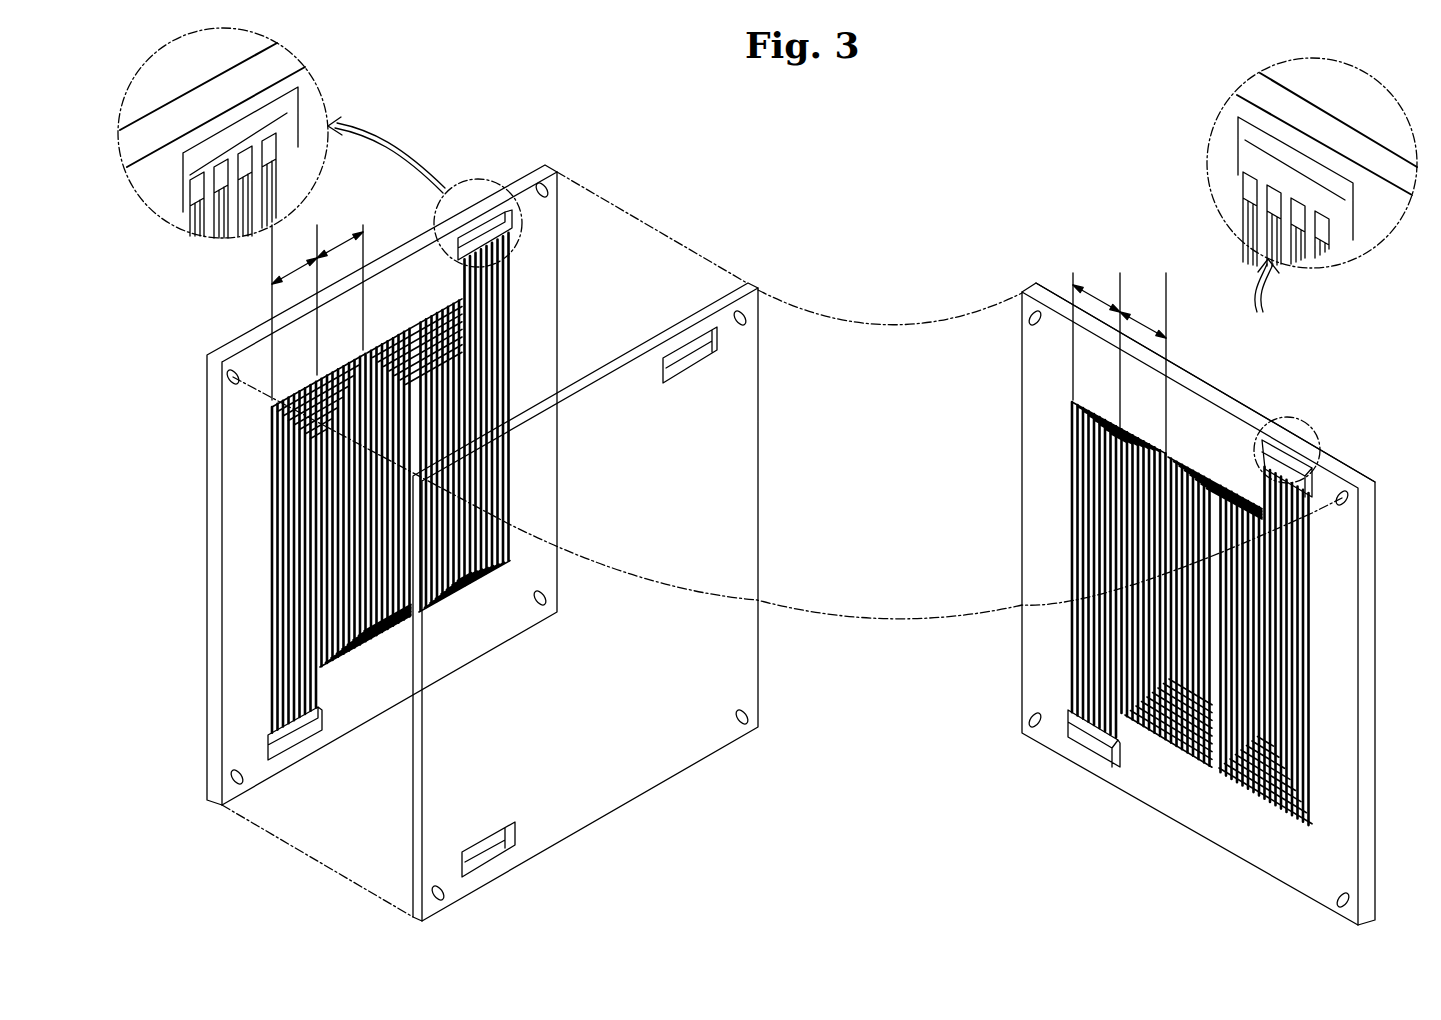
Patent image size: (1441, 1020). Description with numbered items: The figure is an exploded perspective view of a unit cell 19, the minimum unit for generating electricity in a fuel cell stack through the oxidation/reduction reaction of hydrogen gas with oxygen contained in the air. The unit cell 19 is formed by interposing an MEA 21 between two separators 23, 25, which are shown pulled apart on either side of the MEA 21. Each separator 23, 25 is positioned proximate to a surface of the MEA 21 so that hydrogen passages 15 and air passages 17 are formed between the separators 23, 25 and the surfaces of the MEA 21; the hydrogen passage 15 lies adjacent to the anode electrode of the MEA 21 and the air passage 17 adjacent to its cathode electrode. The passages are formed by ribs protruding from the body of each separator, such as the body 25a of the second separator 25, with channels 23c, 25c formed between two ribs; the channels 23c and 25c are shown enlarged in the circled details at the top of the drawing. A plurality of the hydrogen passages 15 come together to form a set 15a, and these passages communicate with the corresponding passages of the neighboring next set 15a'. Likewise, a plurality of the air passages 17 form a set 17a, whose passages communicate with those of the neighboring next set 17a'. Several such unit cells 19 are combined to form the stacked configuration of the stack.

The hydrogen passage 15 is at (270, 515).
The set of hydrogen passages 15a is at (287, 312).
The next set of hydrogen passages 15a' is at (336, 284).
The air passage 17 is at (1072, 655).
The set of air passages 17a is at (1103, 351).
The next set of air passages 17a' is at (1152, 364).
The unit cell 19 is at (948, 166).
The MEA 21 is at (648, 791).
The separator 23 is at (395, 213).
The channel 23c is at (193, 223).
The separator 25 is at (1168, 279).
The body 25a is at (1195, 380).
The channel 25c is at (1343, 247).